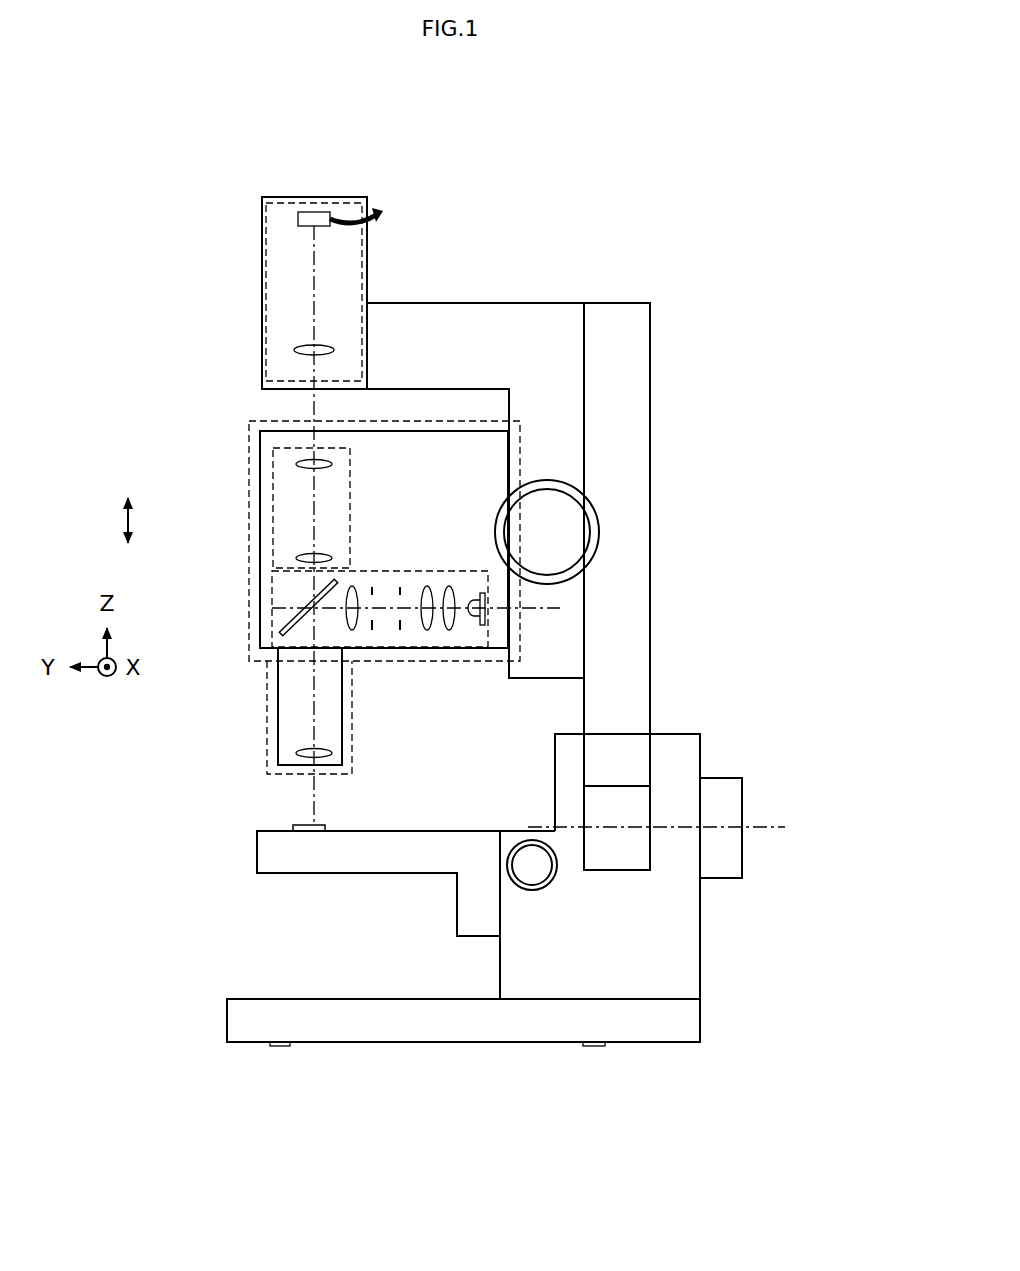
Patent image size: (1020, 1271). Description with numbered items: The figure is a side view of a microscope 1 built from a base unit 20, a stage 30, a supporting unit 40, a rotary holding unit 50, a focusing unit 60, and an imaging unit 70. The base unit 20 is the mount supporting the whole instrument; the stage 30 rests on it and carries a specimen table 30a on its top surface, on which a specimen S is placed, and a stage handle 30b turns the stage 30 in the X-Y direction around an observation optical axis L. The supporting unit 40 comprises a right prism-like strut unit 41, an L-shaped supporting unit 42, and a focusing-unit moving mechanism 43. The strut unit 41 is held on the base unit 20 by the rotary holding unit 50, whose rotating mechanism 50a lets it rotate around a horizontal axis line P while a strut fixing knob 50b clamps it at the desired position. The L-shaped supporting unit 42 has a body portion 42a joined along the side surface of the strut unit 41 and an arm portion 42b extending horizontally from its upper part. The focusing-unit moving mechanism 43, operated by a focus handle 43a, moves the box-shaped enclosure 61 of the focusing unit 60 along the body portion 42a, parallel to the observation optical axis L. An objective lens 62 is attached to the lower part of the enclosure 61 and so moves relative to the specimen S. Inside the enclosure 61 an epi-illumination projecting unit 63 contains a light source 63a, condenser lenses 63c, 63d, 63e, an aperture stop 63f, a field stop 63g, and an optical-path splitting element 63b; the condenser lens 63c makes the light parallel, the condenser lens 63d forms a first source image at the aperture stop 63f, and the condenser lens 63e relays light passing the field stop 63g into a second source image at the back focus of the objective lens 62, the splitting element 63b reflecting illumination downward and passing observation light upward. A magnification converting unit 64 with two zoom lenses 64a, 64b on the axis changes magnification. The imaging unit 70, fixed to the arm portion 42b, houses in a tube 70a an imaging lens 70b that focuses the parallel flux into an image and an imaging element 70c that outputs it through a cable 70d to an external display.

The microscope 1 is at (647, 190).
The base unit 20 is at (538, 968).
The stage 30 is at (477, 905).
The specimen table 30a is at (262, 826).
The stage handle 30b is at (537, 866).
The supporting unit 40 is at (550, 284).
The strut unit 41 is at (632, 570).
The L-shaped supporting unit 42 is at (480, 284).
The body portion 42a is at (558, 613).
The arm portion 42b is at (415, 322).
The focusing-unit moving mechanism 43 is at (548, 476).
The focus handle 43a is at (558, 527).
The rotary holding unit 50 is at (786, 727).
The rotating mechanism 50a is at (625, 805).
The strut fixing knob 50b is at (720, 808).
The focusing unit 60 is at (250, 430).
The enclosure 61 is at (262, 457).
The objective lens 62 is at (290, 717).
The epi-illumination projecting unit 63 is at (268, 615).
The light source 63a is at (480, 630).
The optical-path splitting element 63b is at (300, 640).
The condenser lens 63c is at (449, 632).
The condenser lens 63d is at (427, 632).
The condenser lens 63e is at (352, 632).
The aperture stop 63f is at (400, 583).
The field stop 63g is at (372, 583).
The magnification converting unit 64 is at (268, 535).
The zoom lens 64a is at (290, 556).
The zoom lens 64b is at (297, 463).
The imaging unit 70 is at (262, 237).
The tube 70a is at (294, 278).
The imaging lens 70b is at (298, 349).
The imaging element 70c is at (312, 212).
The cable 70d is at (377, 207).
The observation optical axis L is at (305, 805).
The specimen S is at (300, 825).
The horizontal axis line P is at (765, 826).